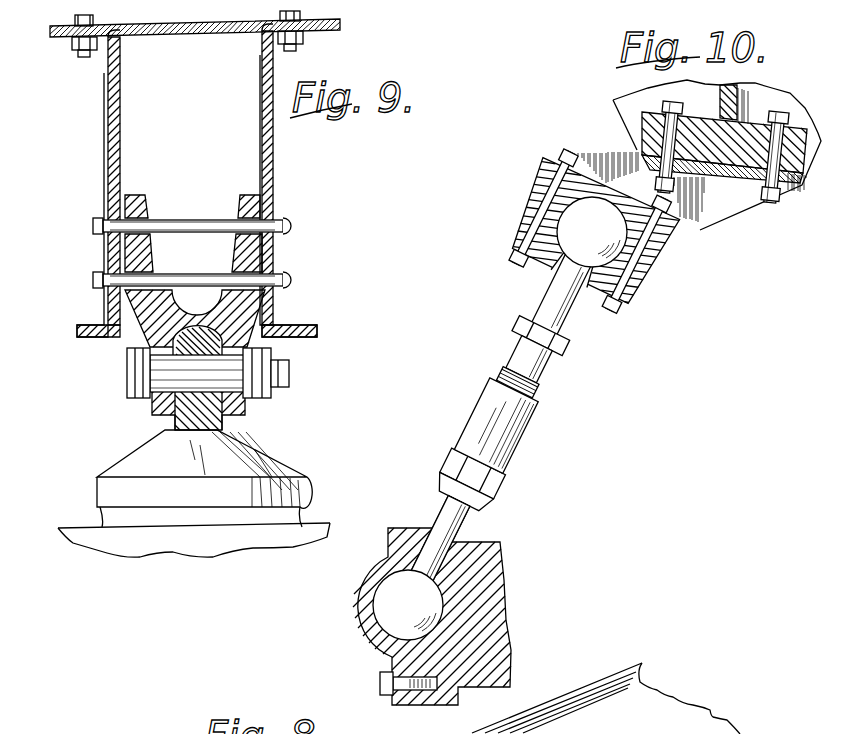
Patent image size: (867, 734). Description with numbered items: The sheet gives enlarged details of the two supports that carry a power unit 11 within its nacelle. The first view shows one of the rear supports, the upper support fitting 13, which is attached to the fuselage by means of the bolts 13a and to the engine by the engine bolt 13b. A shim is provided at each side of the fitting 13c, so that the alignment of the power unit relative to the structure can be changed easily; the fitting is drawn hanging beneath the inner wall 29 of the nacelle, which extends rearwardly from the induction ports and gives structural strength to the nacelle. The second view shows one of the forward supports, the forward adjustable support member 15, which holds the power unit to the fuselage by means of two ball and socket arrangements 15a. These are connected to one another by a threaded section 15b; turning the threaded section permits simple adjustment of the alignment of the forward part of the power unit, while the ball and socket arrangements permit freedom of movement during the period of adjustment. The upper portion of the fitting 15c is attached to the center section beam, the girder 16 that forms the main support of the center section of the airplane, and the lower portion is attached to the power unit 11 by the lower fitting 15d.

In FIG. 9, the inner wall 29 is at (181, 35).
In FIG. 9, the upper support fitting 13 is at (266, 452).
In FIG. 9, the bolts 13a is at (291, 223).
In FIG. 9, the engine bolt 13b is at (137, 376).
In FIG. 9, the shim 13c is at (242, 197).
In FIG. 10, the girder 16 is at (748, 122).
In FIG. 10, the forward adjustable support 15 is at (486, 380).
In FIG. 10, the ball and socket arrangements 15a is at (650, 302).
In FIG. 10, the threaded section 15b is at (533, 420).
In FIG. 10, the fitting 15c is at (547, 158).
In FIG. 10, the lower fitting 15d is at (392, 658).
In FIG. 10, the power unit 11 is at (500, 623).